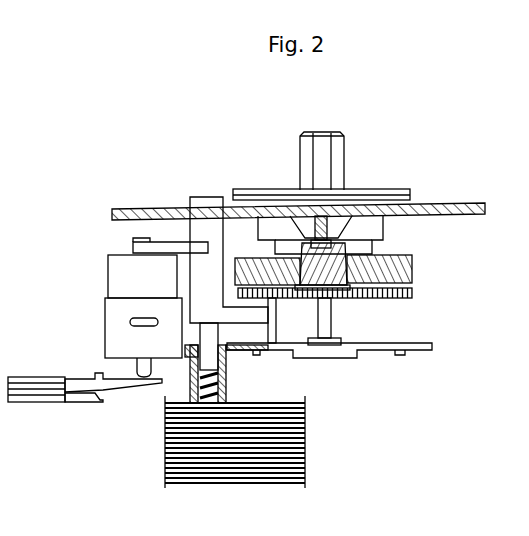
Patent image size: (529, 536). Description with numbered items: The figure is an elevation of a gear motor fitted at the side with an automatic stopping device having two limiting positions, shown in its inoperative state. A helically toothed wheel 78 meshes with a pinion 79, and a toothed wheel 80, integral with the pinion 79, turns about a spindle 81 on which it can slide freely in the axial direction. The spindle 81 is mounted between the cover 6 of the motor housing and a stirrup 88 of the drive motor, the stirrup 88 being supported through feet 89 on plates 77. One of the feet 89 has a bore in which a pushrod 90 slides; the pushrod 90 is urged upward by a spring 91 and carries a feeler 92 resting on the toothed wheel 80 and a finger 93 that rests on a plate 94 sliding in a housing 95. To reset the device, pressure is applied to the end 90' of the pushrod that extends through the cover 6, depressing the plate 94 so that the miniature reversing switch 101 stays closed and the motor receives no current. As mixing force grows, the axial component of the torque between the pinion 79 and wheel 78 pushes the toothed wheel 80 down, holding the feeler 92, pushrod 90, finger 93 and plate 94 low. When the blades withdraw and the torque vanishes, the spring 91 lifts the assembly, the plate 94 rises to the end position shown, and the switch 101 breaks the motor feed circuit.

The cover 6 is at (467, 207).
The plates 77 is at (303, 448).
The helically toothed wheel 78 is at (406, 266).
The pinion 79 is at (345, 262).
The toothed wheel 80 is at (394, 299).
The spindle 81 is at (328, 323).
The stirrup 88 is at (332, 346).
The feet 89 is at (226, 375).
The pushrod 90 is at (227, 345).
The end of pushrod 90' is at (229, 236).
The spring 91 is at (226, 398).
The feeler 92 is at (264, 306).
The finger 93 is at (132, 252).
The plate 94 is at (120, 276).
The housing 95 is at (132, 322).
The miniature reversing switch 101 is at (44, 388).